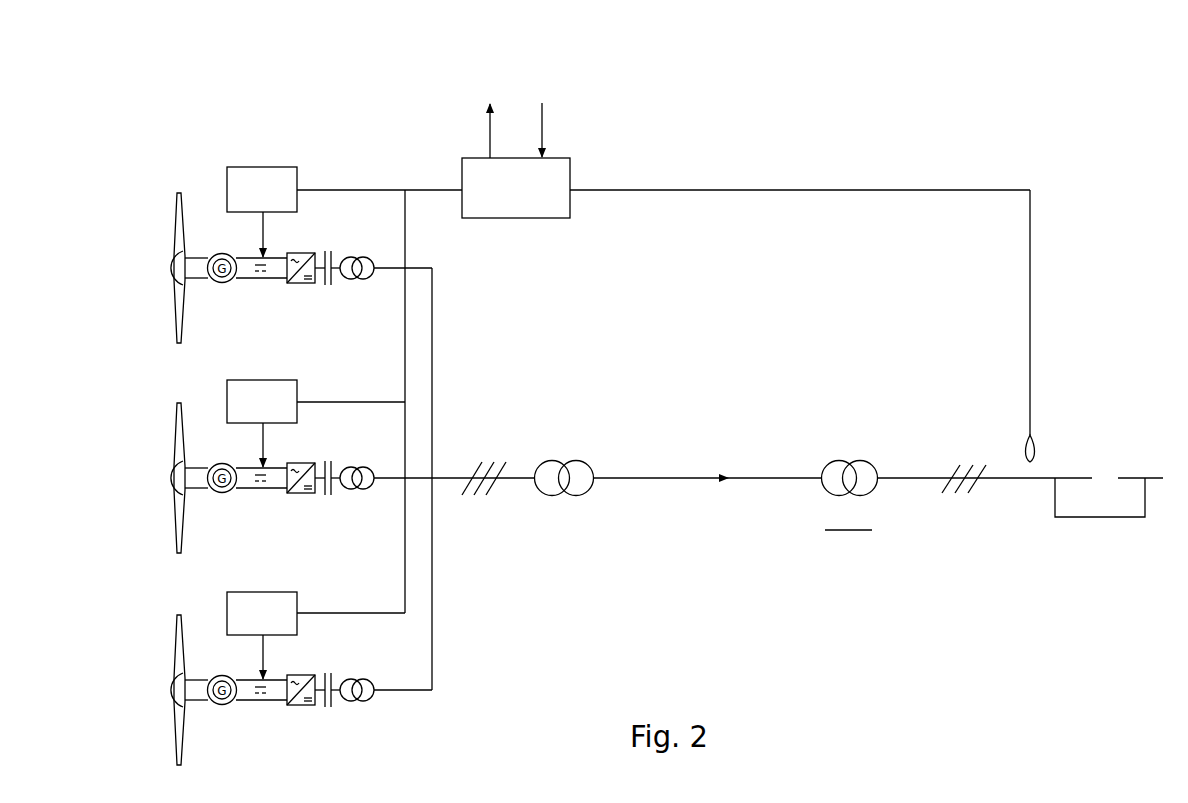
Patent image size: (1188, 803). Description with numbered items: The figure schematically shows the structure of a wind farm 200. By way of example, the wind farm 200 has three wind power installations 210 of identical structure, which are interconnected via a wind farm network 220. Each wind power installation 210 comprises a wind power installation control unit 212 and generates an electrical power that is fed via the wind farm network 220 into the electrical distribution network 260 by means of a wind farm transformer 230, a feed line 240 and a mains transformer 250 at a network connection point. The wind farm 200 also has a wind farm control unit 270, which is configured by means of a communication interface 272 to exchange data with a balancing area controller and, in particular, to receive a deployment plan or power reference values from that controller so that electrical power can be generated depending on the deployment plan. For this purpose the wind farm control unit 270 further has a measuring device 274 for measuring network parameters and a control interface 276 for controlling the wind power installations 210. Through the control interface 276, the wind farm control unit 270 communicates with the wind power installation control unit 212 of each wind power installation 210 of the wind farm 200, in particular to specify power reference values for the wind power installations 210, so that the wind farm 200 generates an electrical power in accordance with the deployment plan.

The wind farm 200 is at (674, 132).
The wind power installation 210 is at (150, 286).
The wind power installation control unit 212 is at (257, 166).
The wind farm network 220 is at (456, 344).
The wind farm transformer 230 is at (583, 458).
The feed line 240 is at (688, 460).
The mains transformer 250 is at (868, 453).
The electrical distribution network 260 is at (1040, 523).
The wind farm control unit 270 is at (570, 218).
The communication interface 272 is at (516, 102).
The measuring device 274 is at (1032, 360).
The control interface 276 is at (458, 172).